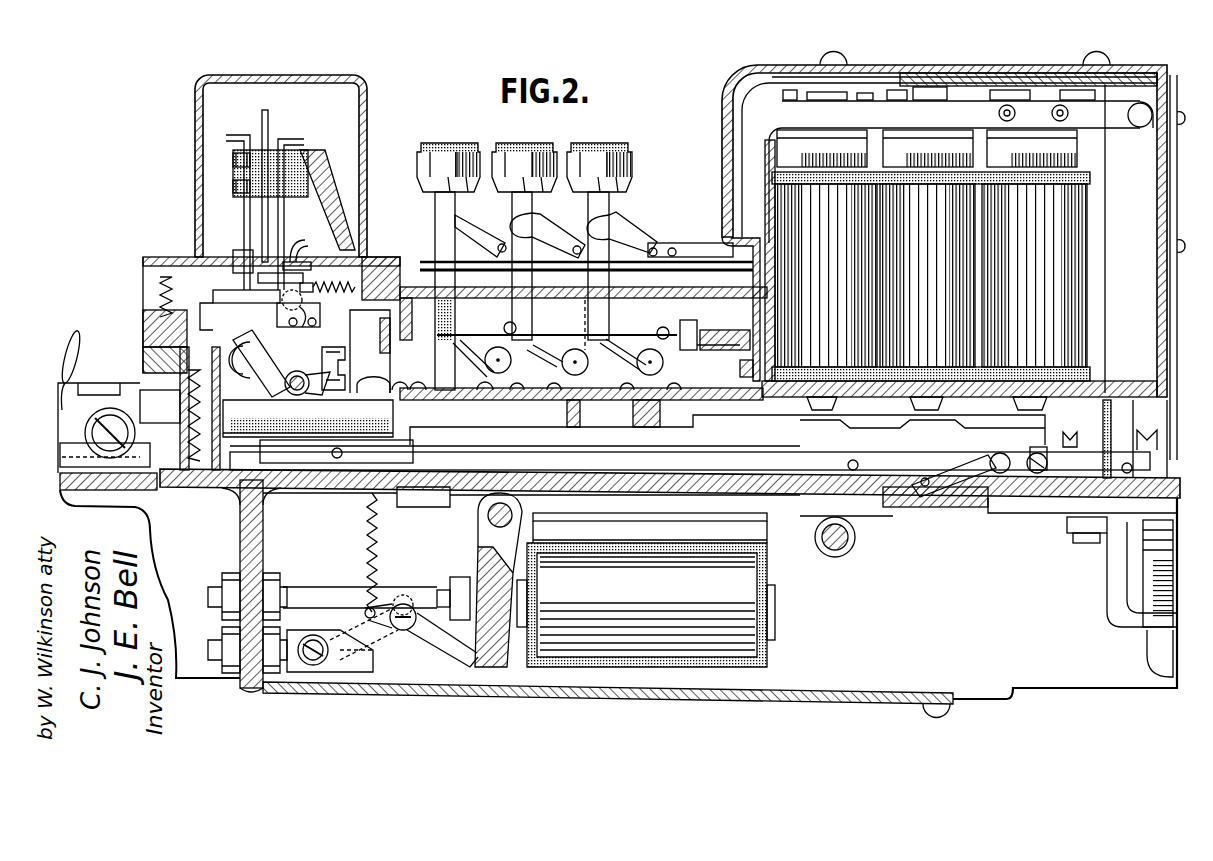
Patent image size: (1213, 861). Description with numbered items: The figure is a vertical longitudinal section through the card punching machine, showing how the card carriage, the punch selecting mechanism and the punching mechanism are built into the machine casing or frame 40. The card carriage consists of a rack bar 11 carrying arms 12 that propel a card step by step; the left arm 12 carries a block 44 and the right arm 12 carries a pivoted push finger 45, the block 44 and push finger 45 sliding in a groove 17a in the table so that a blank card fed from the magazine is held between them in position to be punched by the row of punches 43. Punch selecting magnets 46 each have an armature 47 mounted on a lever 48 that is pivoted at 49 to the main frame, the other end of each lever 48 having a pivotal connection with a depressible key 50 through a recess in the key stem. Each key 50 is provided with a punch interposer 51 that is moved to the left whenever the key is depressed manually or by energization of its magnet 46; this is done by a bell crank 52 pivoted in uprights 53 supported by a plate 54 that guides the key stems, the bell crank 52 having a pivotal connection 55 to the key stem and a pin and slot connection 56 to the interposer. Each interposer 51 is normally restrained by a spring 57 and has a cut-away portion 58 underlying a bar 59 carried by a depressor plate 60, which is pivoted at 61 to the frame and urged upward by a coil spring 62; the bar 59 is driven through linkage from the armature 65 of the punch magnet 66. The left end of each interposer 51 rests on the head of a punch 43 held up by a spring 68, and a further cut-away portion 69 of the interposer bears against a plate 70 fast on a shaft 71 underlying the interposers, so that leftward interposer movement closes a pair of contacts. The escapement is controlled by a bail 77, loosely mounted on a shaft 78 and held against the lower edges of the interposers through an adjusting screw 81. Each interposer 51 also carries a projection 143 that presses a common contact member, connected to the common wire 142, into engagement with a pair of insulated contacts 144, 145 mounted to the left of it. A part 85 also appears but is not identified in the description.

The rack bar 11 is at (1075, 440).
The arms 12 is at (128, 392).
The groove 17a is at (893, 508).
The machine casing or frame 40 is at (794, 450).
The punches 43 is at (262, 452).
The block 44 is at (163, 488).
The push finger 45 is at (955, 480).
The punch selecting magnets 46 is at (943, 247).
The armature 47 is at (928, 143).
The lever 48 is at (750, 153).
The pivot 49 is at (1140, 124).
The depressible keys 50 is at (593, 167).
The punch interposer 51 is at (467, 312).
The bell cranks 52 is at (592, 333).
The uprights 53 is at (573, 388).
The plate 54 is at (480, 405).
The pivotal connection 55 is at (609, 352).
The pin and slot connection 56 is at (660, 325).
The spring 57 is at (333, 280).
The cut-away portion 58 is at (218, 317).
The bar 59 is at (213, 300).
The depressor plate 60 is at (197, 249).
The pivot 61 is at (277, 316).
The coil spring 62 is at (158, 293).
The armature 65 is at (540, 575).
The punch magnet 66 is at (638, 650).
The spring 68 is at (222, 404).
The cut-away portion 69 is at (362, 314).
The plate 70 is at (392, 356).
The shaft 71 is at (393, 380).
The bail 77 is at (259, 363).
The shaft 78 is at (299, 374).
The adjusting screw 81 is at (317, 327).
The block 85 is at (346, 366).
The common wire 142 is at (282, 236).
The projection 143 is at (293, 262).
The contact 144 is at (260, 240).
The contact 145 is at (248, 262).